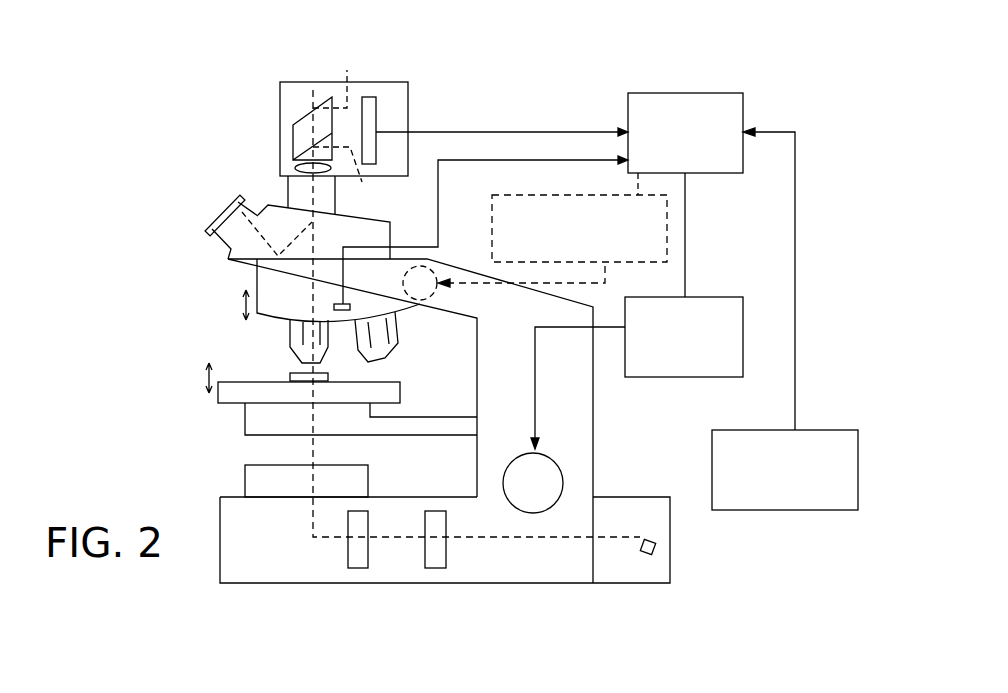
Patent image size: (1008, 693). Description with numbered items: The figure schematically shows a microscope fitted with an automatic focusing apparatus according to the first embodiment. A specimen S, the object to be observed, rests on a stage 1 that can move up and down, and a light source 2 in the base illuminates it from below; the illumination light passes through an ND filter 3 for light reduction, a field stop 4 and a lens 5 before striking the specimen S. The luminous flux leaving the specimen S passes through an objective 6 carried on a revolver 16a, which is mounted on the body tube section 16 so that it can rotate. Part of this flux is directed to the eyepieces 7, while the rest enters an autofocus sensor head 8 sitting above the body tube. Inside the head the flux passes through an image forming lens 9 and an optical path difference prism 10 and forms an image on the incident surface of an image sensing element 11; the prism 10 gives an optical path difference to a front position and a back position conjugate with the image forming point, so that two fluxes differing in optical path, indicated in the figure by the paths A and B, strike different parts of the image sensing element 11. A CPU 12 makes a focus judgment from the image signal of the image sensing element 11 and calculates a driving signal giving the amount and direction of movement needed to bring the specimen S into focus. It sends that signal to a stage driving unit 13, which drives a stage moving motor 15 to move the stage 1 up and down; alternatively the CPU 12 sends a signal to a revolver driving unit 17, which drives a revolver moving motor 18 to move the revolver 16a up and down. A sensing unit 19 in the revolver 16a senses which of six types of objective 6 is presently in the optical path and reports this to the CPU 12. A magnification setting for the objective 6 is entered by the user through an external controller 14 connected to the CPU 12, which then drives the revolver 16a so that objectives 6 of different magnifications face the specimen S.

The stage 1 is at (218, 400).
The light source 2 is at (641, 550).
The ND filter 3 is at (446, 560).
The field stop 4 is at (348, 560).
The lens 5 is at (245, 484).
The objective 6 is at (290, 340).
The eyepieces 7 is at (236, 202).
The autofocus sensor head 8 is at (281, 82).
The image forming lens 9 is at (295, 168).
The optical path difference prism 10 is at (321, 97).
The image sensing element 11 is at (376, 101).
The CPU 12 is at (690, 93).
The stage driving unit 13 is at (745, 320).
The external controller 14 is at (750, 510).
The stage moving motor 15 is at (559, 466).
The body tube section 16 is at (228, 259).
The revolver 16a is at (257, 290).
The revolver driving unit 17 is at (492, 198).
The revolver moving motor 18 is at (433, 296).
The sensing unit 19 is at (348, 304).
The optical path A is at (347, 176).
The optical path B is at (339, 80).
The specimen S is at (290, 376).